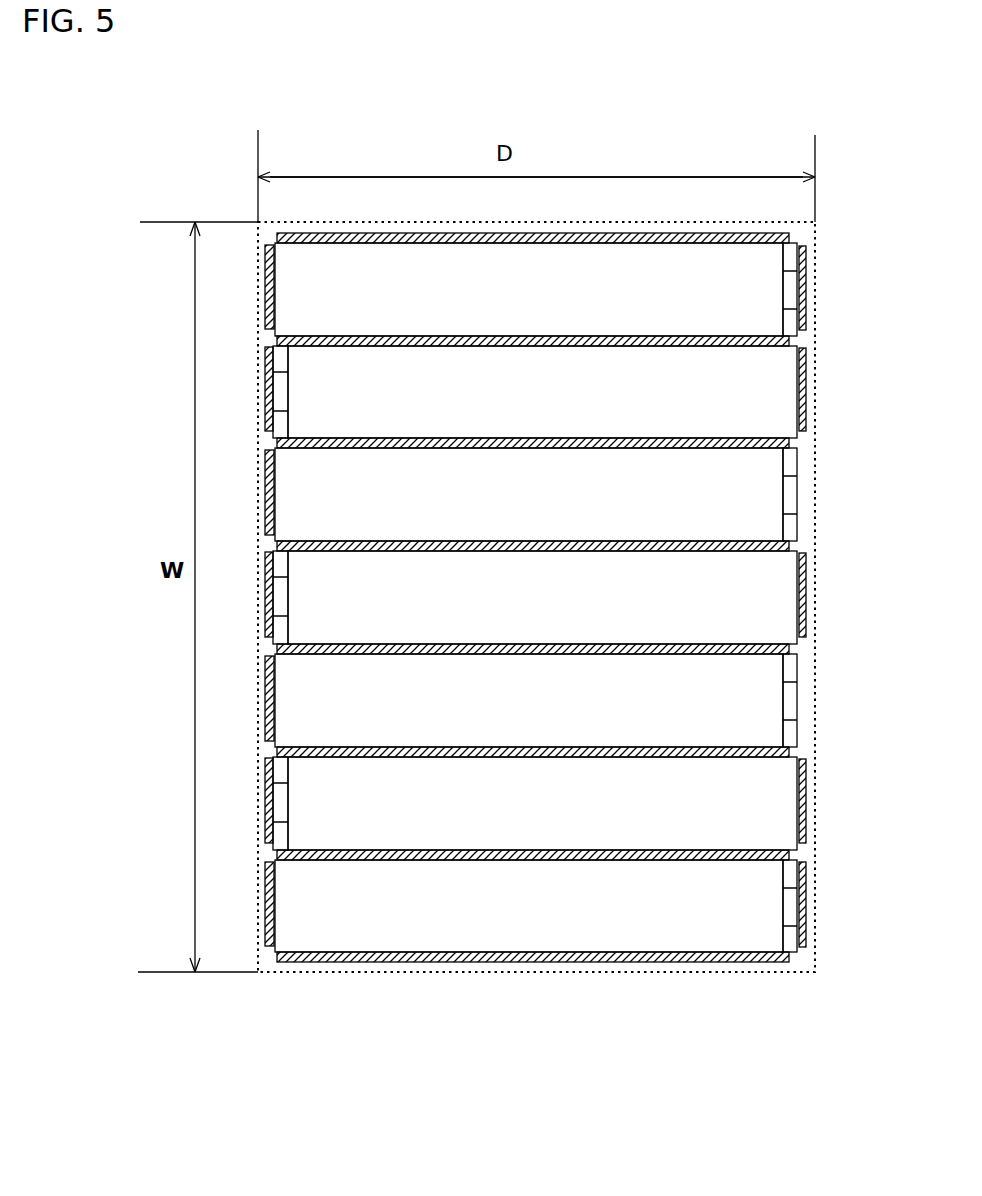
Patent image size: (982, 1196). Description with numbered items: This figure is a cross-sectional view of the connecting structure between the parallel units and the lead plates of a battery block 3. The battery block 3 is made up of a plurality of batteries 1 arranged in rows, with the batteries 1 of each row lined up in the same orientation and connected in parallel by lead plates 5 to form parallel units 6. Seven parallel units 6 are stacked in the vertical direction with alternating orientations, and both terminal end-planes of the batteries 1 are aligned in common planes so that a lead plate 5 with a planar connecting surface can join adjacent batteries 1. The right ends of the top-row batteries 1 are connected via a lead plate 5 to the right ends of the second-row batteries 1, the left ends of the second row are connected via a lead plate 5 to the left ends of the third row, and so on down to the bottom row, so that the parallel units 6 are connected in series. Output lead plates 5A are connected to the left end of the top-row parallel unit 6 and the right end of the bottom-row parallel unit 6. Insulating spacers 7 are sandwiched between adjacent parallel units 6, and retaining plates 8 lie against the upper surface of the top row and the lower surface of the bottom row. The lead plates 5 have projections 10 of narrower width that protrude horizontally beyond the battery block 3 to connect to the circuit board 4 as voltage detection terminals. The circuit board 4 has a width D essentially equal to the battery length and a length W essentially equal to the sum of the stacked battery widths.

The battery 1 is at (533, 308).
The battery block 3 is at (236, 162).
The circuit board 4 is at (378, 220).
The lead plate 5 is at (268, 488).
The output lead plate 5A is at (268, 288).
The parallel unit 6 is at (792, 264).
The spacer 7 is at (619, 347).
The retaining plate 8 is at (572, 233).
The projection 10 is at (276, 440).